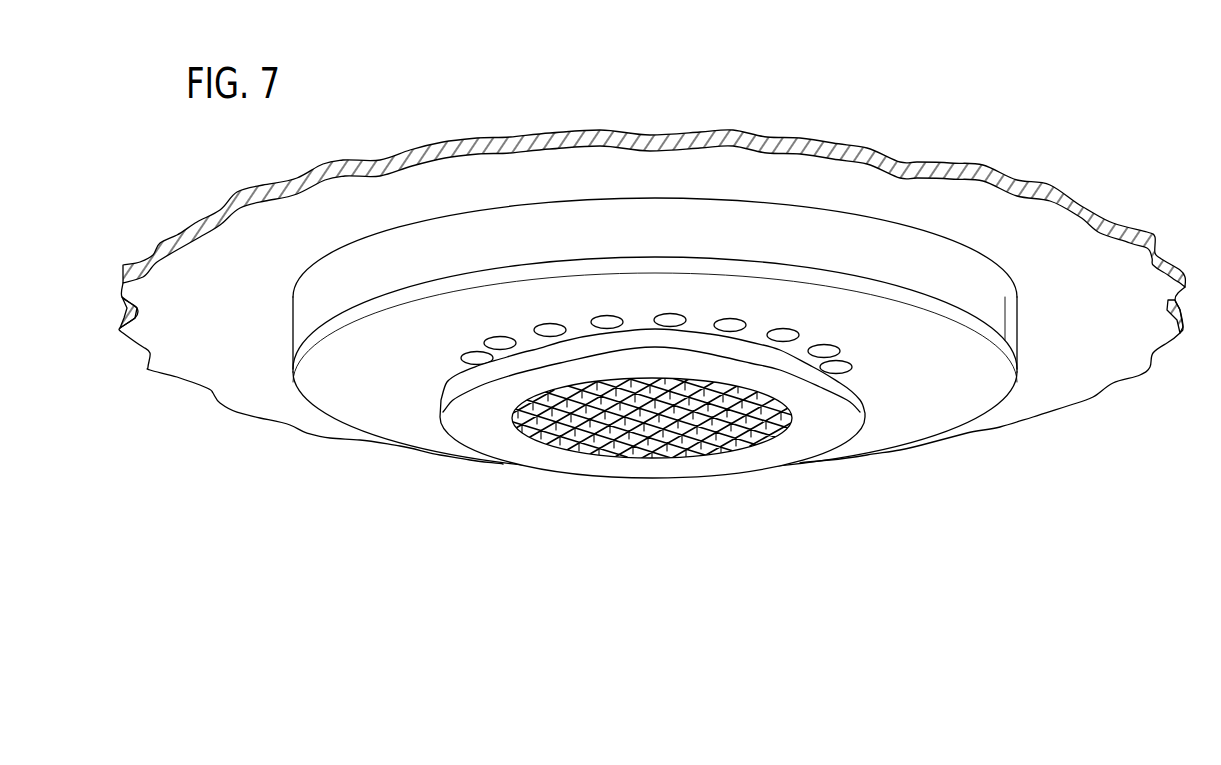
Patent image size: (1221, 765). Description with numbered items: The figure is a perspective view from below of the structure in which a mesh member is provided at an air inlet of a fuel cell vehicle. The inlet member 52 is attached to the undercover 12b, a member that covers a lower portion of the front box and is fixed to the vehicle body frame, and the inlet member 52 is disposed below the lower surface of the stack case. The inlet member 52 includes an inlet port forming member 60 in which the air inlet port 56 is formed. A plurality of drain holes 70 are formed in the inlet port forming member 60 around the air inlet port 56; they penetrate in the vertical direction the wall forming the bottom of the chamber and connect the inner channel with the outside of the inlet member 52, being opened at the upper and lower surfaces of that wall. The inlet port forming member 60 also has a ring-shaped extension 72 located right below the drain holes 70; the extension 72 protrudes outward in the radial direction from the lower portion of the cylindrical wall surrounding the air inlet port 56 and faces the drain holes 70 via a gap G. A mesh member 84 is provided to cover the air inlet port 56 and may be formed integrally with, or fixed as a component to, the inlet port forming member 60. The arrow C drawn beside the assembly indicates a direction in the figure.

The undercover 12b is at (1077, 380).
The inlet member 52 is at (700, 363).
The air inlet port 56 is at (652, 452).
The inlet port forming member 60 is at (362, 417).
The drain holes 70 is at (473, 360).
The ring-shaped extension 72 is at (505, 443).
The mesh member 84 is at (688, 438).
The gap G is at (642, 337).
The direction C is at (903, 480).